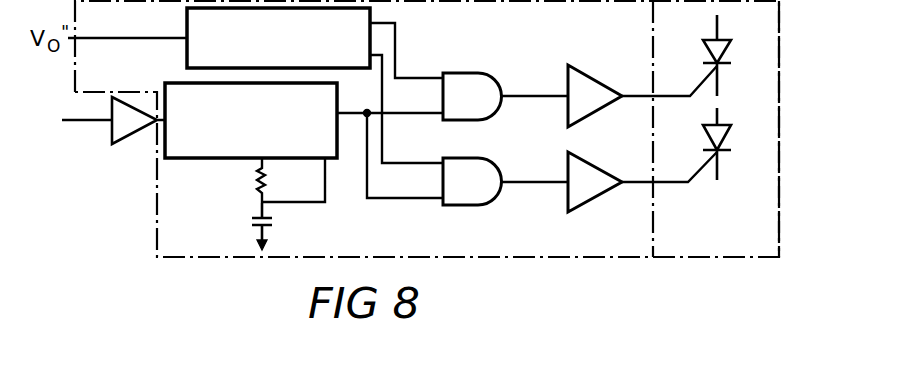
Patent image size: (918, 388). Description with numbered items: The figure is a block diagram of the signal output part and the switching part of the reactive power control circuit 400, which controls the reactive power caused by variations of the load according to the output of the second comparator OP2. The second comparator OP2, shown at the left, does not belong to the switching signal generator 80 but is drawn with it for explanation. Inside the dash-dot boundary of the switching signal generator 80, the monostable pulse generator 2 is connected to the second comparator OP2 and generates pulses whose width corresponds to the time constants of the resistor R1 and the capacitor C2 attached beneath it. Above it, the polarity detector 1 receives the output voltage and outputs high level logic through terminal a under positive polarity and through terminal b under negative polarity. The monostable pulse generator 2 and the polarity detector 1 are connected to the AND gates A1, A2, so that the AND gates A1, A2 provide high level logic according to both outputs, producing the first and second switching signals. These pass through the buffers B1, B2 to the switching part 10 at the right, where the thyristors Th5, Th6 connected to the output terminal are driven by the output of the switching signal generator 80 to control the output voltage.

The polarity detector 1 is at (187, 43).
The monostable pulse generator 2 is at (193, 162).
The switching part 10 is at (779, 163).
The switching signal generator 80 is at (190, 258).
The reactive power control circuit 400 is at (557, 258).
The second comparator OP2 is at (113, 146).
The resistor R1 is at (291, 180).
The capacitor C2 is at (276, 226).
The AND gate A1 is at (472, 96).
The AND gate A2 is at (472, 181).
The buffer B1 is at (595, 96).
The buffer B2 is at (595, 182).
The thyristor Th5 is at (732, 55).
The thyristor Th6 is at (732, 145).